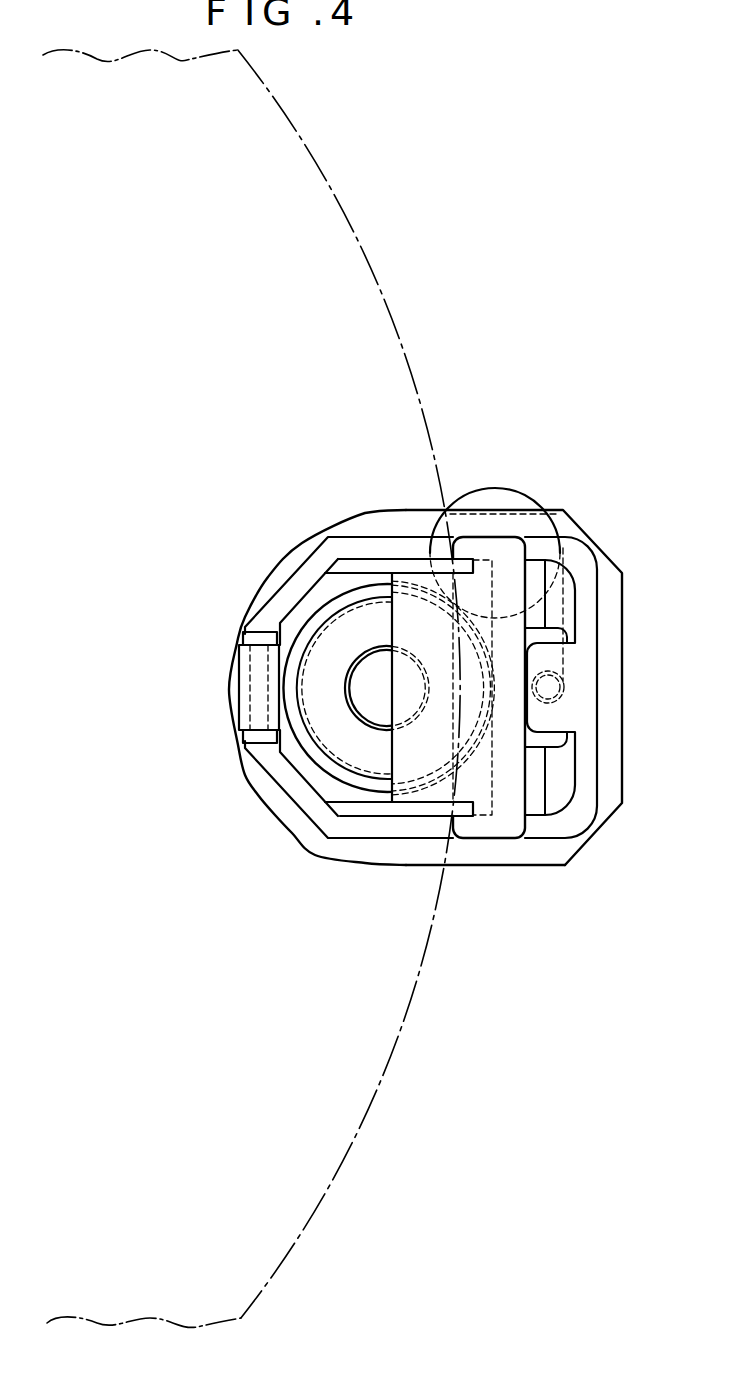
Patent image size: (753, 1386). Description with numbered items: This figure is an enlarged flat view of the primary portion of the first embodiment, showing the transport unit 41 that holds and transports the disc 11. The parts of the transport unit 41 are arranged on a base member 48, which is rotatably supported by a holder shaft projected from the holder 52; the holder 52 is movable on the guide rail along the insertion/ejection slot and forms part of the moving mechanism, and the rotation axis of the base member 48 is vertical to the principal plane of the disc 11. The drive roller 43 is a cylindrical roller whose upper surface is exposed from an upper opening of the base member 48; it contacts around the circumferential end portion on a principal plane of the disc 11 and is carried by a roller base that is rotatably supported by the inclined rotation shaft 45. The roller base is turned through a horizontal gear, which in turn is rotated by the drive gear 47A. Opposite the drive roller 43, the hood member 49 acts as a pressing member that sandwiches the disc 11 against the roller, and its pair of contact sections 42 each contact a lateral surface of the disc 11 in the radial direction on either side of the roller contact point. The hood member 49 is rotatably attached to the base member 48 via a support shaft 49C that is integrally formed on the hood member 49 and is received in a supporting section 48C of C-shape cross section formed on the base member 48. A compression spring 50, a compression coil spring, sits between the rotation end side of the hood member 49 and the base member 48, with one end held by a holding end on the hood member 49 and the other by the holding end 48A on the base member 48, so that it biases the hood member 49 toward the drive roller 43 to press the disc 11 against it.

The disc 11 is at (385, 297).
The transport unit 41 is at (412, 685).
The contact sections 42 is at (462, 576).
The drive roller 43 is at (328, 730).
The inclined rotation shaft 45 is at (378, 704).
The drive gear 47A is at (513, 492).
The base member 48 is at (598, 752).
The holding end 48A is at (556, 657).
The supporting section 48C is at (240, 707).
The hood member 49 is at (387, 630).
The support shaft 49C is at (238, 684).
The compression spring 50 is at (530, 673).
The holder 52 is at (514, 862).